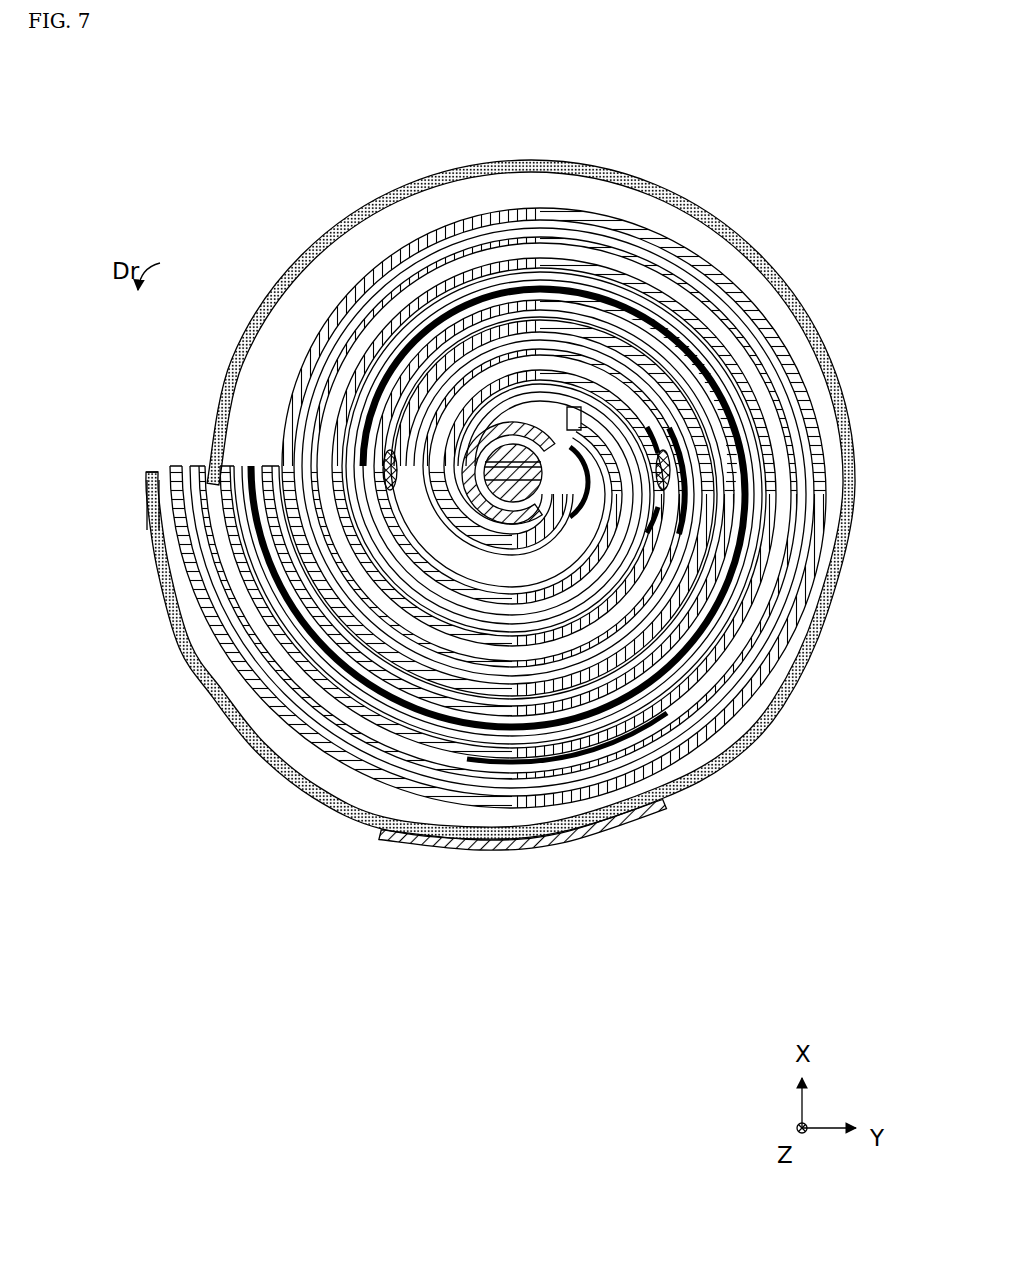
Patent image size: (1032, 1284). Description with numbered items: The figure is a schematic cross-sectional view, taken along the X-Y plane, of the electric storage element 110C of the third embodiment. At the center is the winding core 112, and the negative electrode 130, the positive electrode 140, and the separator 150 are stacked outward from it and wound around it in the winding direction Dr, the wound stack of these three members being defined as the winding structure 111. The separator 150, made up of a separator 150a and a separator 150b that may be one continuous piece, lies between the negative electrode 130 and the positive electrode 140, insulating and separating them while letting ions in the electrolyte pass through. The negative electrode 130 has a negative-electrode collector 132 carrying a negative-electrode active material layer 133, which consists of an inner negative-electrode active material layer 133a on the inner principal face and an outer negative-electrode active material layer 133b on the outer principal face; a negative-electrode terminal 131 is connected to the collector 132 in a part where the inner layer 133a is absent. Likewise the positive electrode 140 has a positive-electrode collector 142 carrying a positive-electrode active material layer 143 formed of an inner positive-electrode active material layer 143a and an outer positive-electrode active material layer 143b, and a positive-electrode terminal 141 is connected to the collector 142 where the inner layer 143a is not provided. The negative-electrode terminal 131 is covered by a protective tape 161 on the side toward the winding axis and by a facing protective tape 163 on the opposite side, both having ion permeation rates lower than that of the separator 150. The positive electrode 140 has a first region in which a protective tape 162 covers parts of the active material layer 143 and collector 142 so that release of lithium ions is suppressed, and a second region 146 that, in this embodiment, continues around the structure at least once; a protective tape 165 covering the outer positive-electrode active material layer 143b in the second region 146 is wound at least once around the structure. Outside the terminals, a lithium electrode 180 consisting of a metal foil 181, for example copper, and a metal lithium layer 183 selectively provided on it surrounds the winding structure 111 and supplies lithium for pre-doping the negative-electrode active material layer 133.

The electric storage element 110C is at (798, 157).
The winding structure 111 is at (590, 412).
The winding core 112 is at (574, 428).
The negative electrode 130 is at (855, 960).
The negative-electrode terminal 131 is at (738, 330).
The negative-electrode collector 132 is at (735, 620).
The negative-electrode active material layer 133 is at (775, 950).
The negative-electrode active material layer 133a is at (690, 650).
The negative-electrode active material layer 133b is at (635, 660).
The positive electrode 140 is at (540, 992).
The positive-electrode terminal 141 is at (548, 440).
The positive-electrode collector 142 is at (500, 600).
The positive-electrode active material layer 143 is at (600, 936).
The positive-electrode active material layer 143a is at (548, 700).
The positive-electrode active material layer 143b is at (520, 610).
The second region 146 is at (447, 305).
The separator 150 is at (252, 796).
The separator 150a is at (300, 640).
The separator 150b is at (285, 665).
The protective tape 161 is at (700, 715).
The protective tape 162 is at (688, 247).
The protective tape 163 is at (760, 650).
The protective tape 165 is at (482, 285).
The lithium electrode 180 is at (262, 182).
The metal foil 181 is at (309, 245).
The metal lithium layer 183 is at (156, 470).